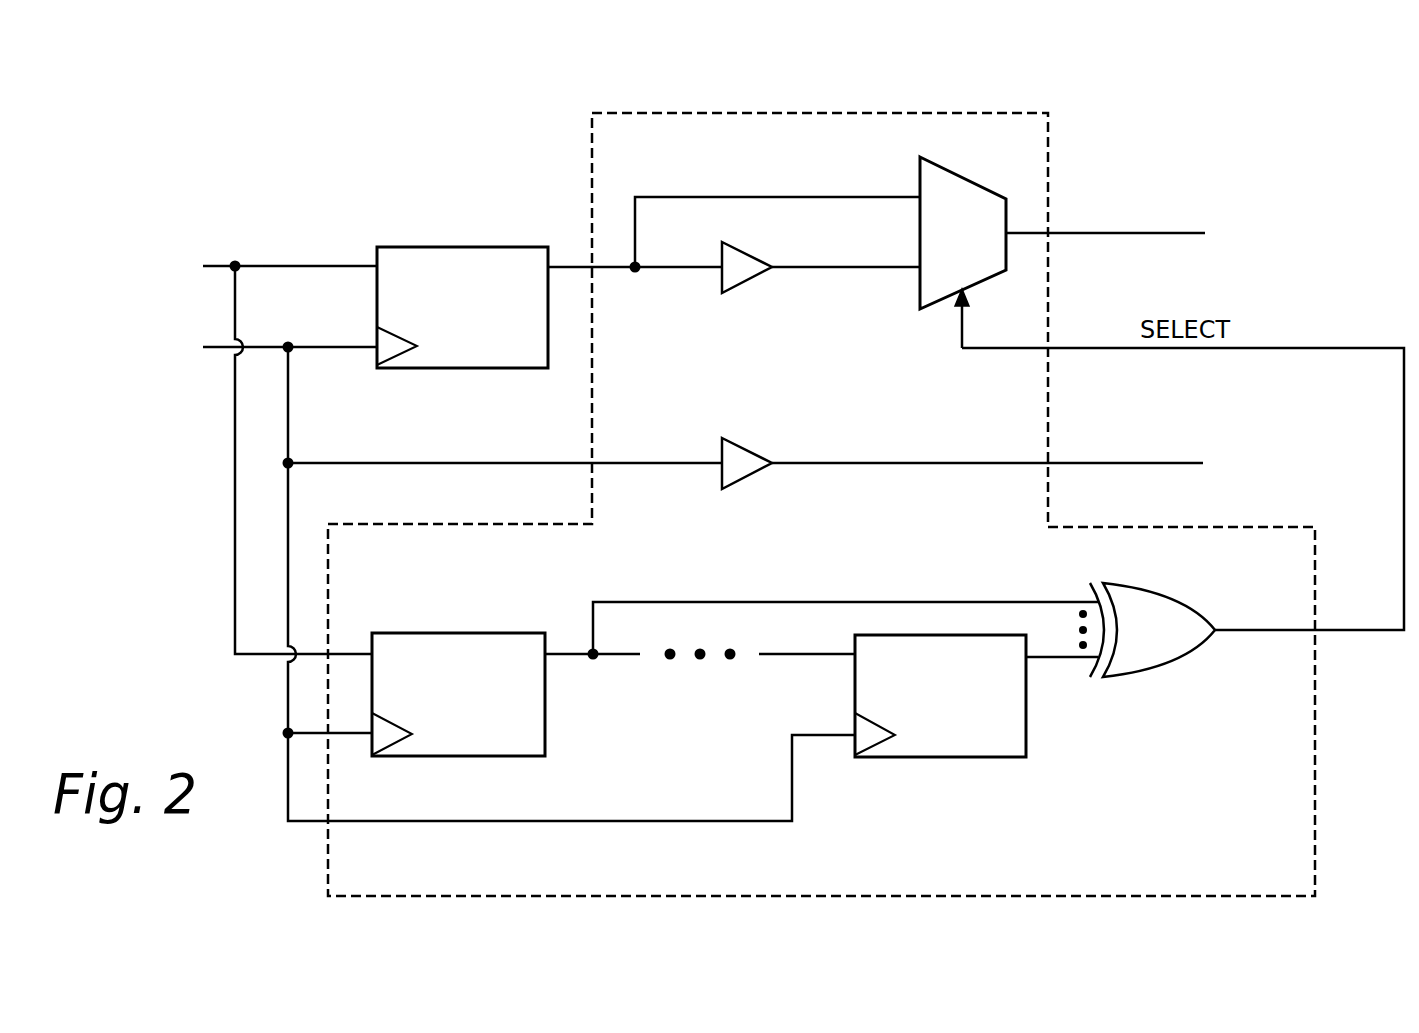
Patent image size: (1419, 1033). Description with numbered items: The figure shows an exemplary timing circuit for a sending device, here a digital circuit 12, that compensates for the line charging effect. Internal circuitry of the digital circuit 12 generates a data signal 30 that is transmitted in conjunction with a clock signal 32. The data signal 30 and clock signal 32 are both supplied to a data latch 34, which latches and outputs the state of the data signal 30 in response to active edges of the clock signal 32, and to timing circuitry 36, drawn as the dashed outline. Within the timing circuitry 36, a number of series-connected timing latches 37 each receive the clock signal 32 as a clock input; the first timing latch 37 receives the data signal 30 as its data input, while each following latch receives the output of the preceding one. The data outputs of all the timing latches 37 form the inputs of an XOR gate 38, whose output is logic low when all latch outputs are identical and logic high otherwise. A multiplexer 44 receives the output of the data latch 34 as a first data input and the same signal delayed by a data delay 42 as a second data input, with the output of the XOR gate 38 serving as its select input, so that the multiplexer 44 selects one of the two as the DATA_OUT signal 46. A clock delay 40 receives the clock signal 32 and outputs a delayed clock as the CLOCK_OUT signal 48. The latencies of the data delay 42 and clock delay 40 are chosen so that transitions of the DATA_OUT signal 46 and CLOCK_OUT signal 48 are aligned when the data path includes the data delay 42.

The digital circuit 12 is at (1120, 114).
The data signal 30 is at (297, 267).
The clock signal 32 is at (330, 349).
The data latch 34 is at (523, 345).
The timing circuitry 36 is at (1267, 849).
The flip-flops 37 is at (523, 733).
The XOR gate 38 is at (1163, 664).
The clock delay 40 is at (732, 415).
The data delay 42 is at (732, 220).
The multiplexer 44 is at (998, 247).
The DATA_OUT signal 46 is at (1160, 235).
The CLOCK_OUT signal 48 is at (1157, 465).